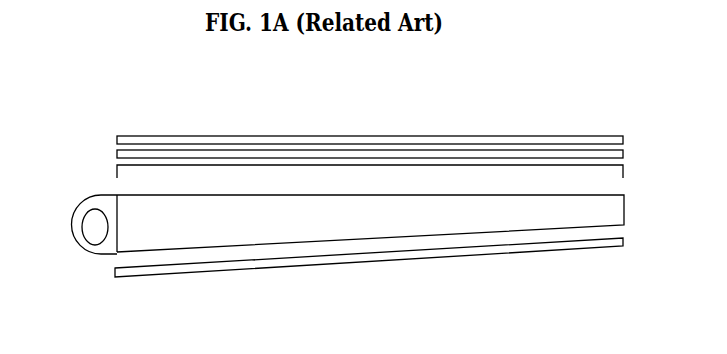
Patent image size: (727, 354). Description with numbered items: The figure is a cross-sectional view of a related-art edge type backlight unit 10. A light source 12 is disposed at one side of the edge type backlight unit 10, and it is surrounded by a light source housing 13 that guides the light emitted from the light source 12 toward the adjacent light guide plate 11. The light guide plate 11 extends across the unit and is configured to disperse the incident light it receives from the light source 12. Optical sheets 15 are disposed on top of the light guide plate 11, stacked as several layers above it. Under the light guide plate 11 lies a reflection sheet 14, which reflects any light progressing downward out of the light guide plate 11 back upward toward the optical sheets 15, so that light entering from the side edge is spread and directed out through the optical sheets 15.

The edge type backlight unit 10 is at (218, 102).
The light guide plate 11 is at (190, 240).
The light source 12 is at (92, 230).
The light source housing 13 is at (75, 210).
The reflection sheet 14 is at (142, 273).
The optical sheets 15 is at (110, 137).